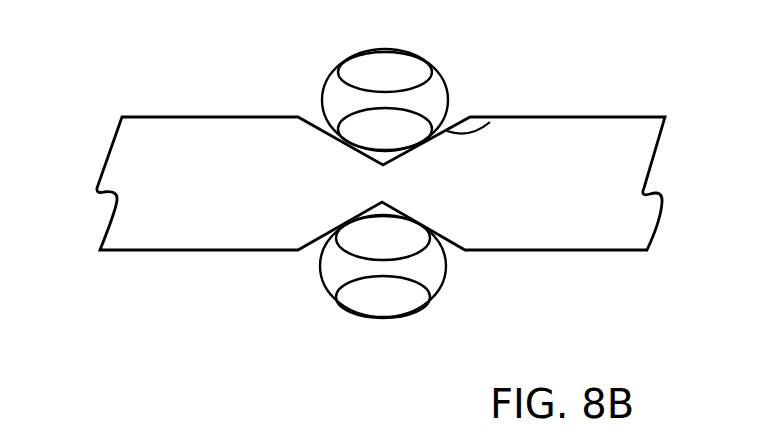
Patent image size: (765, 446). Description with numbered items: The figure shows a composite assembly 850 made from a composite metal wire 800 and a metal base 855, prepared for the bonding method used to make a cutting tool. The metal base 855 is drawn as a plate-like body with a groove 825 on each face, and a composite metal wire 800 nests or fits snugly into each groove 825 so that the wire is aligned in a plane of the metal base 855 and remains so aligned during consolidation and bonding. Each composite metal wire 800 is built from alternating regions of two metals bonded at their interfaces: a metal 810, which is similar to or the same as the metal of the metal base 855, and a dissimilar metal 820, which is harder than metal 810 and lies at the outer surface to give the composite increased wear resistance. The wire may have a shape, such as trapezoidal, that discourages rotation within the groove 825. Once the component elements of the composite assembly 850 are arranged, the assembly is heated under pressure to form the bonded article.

The composite metal wire 800 is at (378, 197).
The metal 810 is at (428, 269).
The dissimilar metal 820 is at (378, 310).
The groove 825 is at (490, 122).
The composite assembly 850 is at (357, 197).
The metal base 855 is at (118, 167).